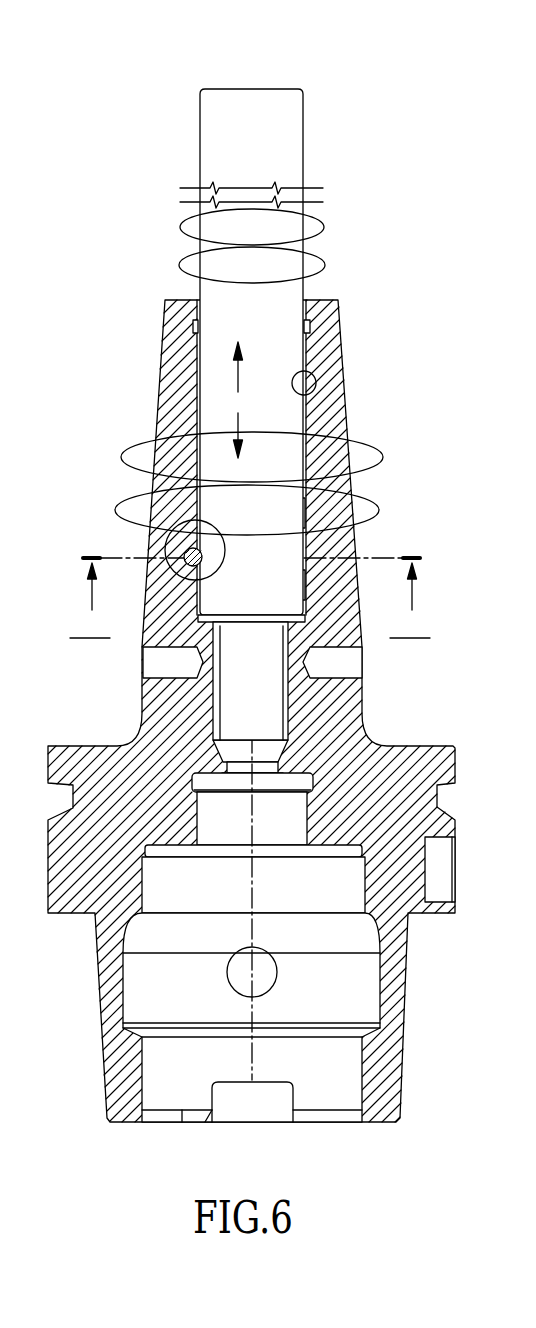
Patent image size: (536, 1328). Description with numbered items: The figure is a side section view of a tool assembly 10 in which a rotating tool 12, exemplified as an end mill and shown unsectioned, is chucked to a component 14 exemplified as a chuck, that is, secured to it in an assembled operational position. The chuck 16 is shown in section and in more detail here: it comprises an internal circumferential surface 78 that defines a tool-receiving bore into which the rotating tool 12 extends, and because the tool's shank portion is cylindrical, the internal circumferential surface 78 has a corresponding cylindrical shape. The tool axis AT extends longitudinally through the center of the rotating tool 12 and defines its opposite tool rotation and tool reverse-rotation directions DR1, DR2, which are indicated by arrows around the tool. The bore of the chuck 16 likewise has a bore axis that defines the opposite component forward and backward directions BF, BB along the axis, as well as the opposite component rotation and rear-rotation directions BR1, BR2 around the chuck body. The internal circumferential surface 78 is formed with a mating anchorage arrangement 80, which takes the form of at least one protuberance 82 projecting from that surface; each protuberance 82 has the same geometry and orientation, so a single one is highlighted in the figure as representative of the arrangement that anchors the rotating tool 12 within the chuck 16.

The tool assembly 10 is at (143, 147).
The rotating tool 12 is at (195, 78).
The component 14 is at (157, 287).
The chuck 16 is at (232, 632).
The internal circumferential surface 78 is at (314, 374).
The mating anchorage arrangement 80 is at (170, 542).
The protuberance 82 is at (215, 574).
The tool rotation direction DR1 is at (317, 222).
The tool reverse-rotation direction DR2 is at (180, 262).
The component rotation direction BR1 is at (365, 438).
The component rear-rotation direction BR2 is at (120, 494).
The tool axis AT is at (243, 317).
The component forward direction BF is at (225, 371).
The component backward direction BB is at (223, 431).